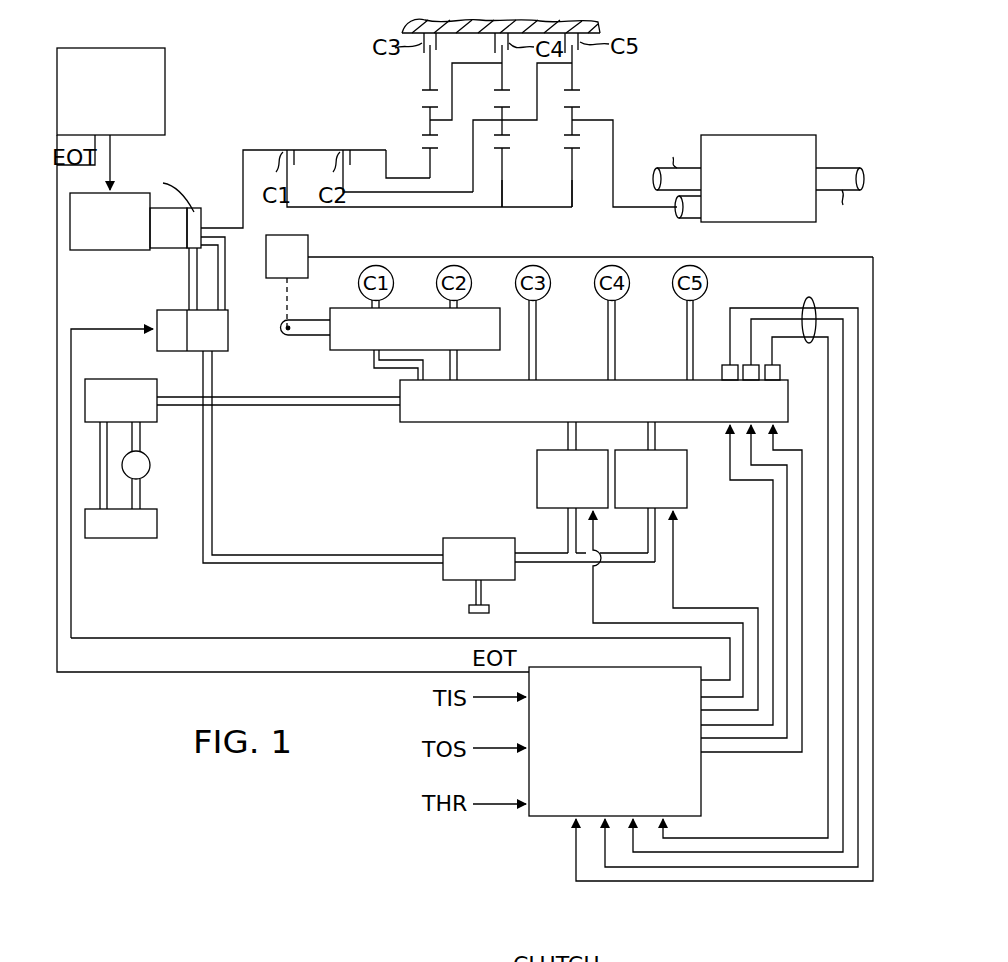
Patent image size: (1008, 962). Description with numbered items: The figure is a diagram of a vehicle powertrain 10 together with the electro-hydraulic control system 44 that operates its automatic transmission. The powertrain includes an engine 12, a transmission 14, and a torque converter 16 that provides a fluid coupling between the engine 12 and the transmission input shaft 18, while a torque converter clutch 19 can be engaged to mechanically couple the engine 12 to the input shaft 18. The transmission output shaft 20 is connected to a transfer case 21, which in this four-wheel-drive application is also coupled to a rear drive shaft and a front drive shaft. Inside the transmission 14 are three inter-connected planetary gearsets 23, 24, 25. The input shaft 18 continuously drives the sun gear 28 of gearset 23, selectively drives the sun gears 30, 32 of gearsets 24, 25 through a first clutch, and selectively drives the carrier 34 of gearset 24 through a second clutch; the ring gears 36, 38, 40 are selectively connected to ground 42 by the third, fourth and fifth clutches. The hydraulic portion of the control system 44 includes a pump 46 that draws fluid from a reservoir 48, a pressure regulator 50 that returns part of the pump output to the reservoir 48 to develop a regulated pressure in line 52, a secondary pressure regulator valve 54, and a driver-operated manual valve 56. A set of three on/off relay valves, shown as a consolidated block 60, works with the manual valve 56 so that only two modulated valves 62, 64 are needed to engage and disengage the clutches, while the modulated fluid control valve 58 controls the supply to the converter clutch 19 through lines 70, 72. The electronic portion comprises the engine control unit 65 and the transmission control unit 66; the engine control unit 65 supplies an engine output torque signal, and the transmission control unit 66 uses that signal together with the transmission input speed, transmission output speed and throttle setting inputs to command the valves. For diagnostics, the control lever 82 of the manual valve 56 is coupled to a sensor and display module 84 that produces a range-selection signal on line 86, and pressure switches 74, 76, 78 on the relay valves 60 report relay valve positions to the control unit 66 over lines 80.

The vehicle powertrain 10 is at (268, 92).
The engine 12 is at (100, 251).
The transmission 14 is at (394, 110).
The torque converter 16 is at (166, 249).
The transmission input shaft 18 is at (243, 163).
The torque converter clutch 19 is at (203, 217).
The transmission output shaft 20 is at (637, 207).
The transfer case 21 is at (745, 134).
The planetary gearset 23 is at (443, 129).
The planetary gearset 24 is at (513, 126).
The planetary gearset 25 is at (586, 110).
The sun gear 28 is at (430, 168).
The sun gear 30 is at (505, 199).
The sun gear 32 is at (574, 199).
The carrier 34 is at (480, 119).
The ring gear 36 is at (425, 59).
The ring gear 38 is at (494, 45).
The ring gear 40 is at (575, 50).
The ground 42 is at (600, 25).
The electro-hydraulic control system 44 is at (884, 300).
The pump 46 is at (150, 466).
The reservoir 48 is at (158, 531).
The pressure regulator 50 is at (123, 379).
The line 52 is at (300, 406).
The secondary pressure regulator valve 54 is at (443, 576).
The manual valve 56 is at (358, 351).
The solenoid operated fluid control valve 58 is at (230, 341).
The relay valves 60 is at (422, 422).
The modulated valve 62 is at (537, 496).
The modulated valve 64 is at (688, 497).
The engine control unit 65 is at (166, 92).
The transmission control unit 66 is at (546, 818).
The line 70 is at (189, 293).
The line 72 is at (225, 287).
The pressure switch 74 is at (727, 365).
The pressure switch 76 is at (760, 378).
The pressure switch 78 is at (782, 372).
The lines 80 is at (816, 294).
The control lever 82 is at (300, 337).
The sensor and display module 84 is at (309, 244).
The line 86 is at (752, 257).